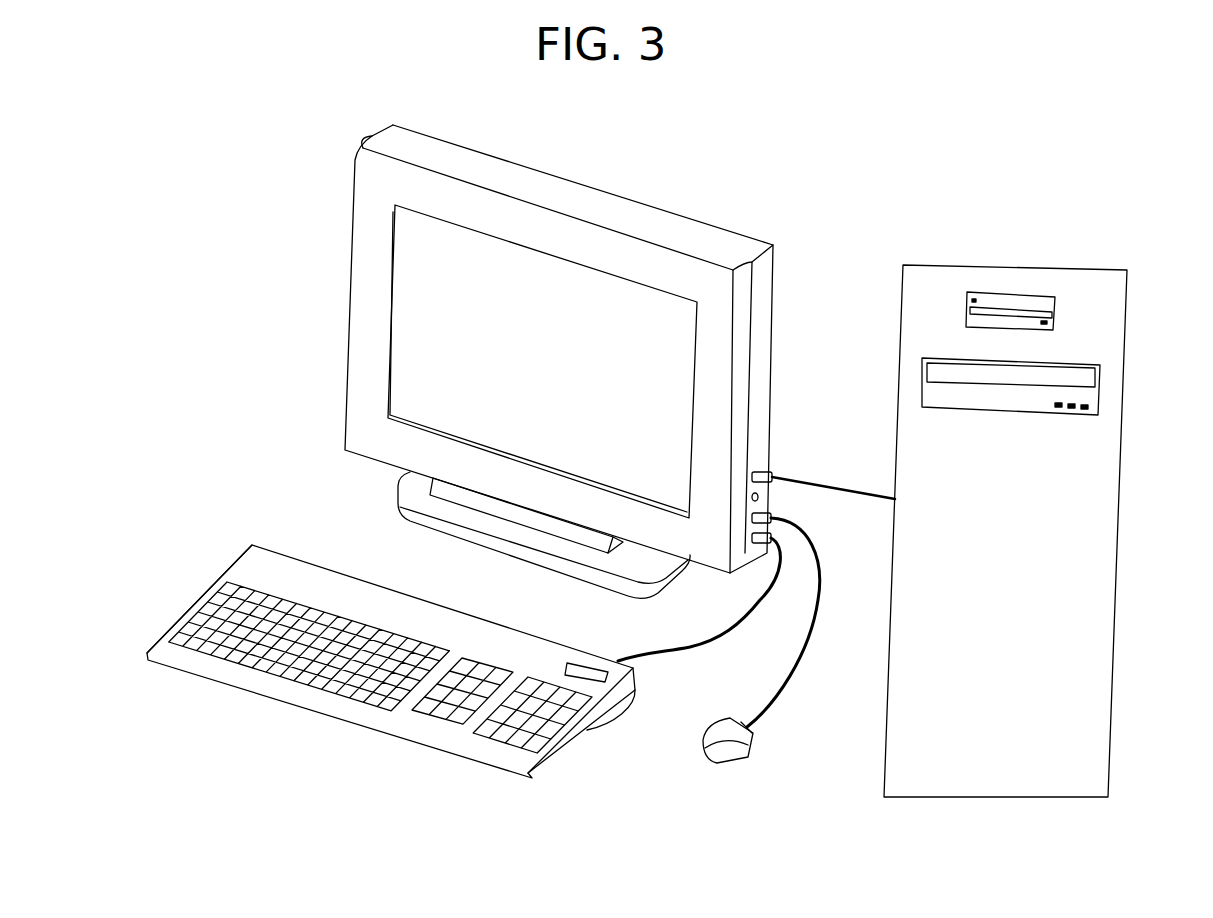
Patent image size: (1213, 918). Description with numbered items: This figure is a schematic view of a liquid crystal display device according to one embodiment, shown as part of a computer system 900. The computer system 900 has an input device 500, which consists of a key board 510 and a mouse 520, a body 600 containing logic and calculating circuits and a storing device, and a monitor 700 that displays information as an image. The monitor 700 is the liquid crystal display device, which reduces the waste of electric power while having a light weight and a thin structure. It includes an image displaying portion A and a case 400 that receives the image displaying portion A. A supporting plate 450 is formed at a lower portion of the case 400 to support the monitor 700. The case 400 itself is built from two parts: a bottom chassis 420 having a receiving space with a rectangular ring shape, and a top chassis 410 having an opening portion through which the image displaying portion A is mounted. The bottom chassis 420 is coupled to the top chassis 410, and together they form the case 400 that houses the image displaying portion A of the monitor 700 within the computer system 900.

The case 400 is at (775, 143).
The top chassis 410 is at (718, 240).
The bottom chassis 420 is at (662, 207).
The supporting plate 450 is at (407, 493).
The input device 500 is at (715, 810).
The key board 510 is at (590, 733).
The mouse 520 is at (716, 763).
The body 600 is at (1100, 553).
The monitor 700 is at (296, 283).
The computer system 900 is at (1037, 167).
The image displaying portion A is at (558, 290).